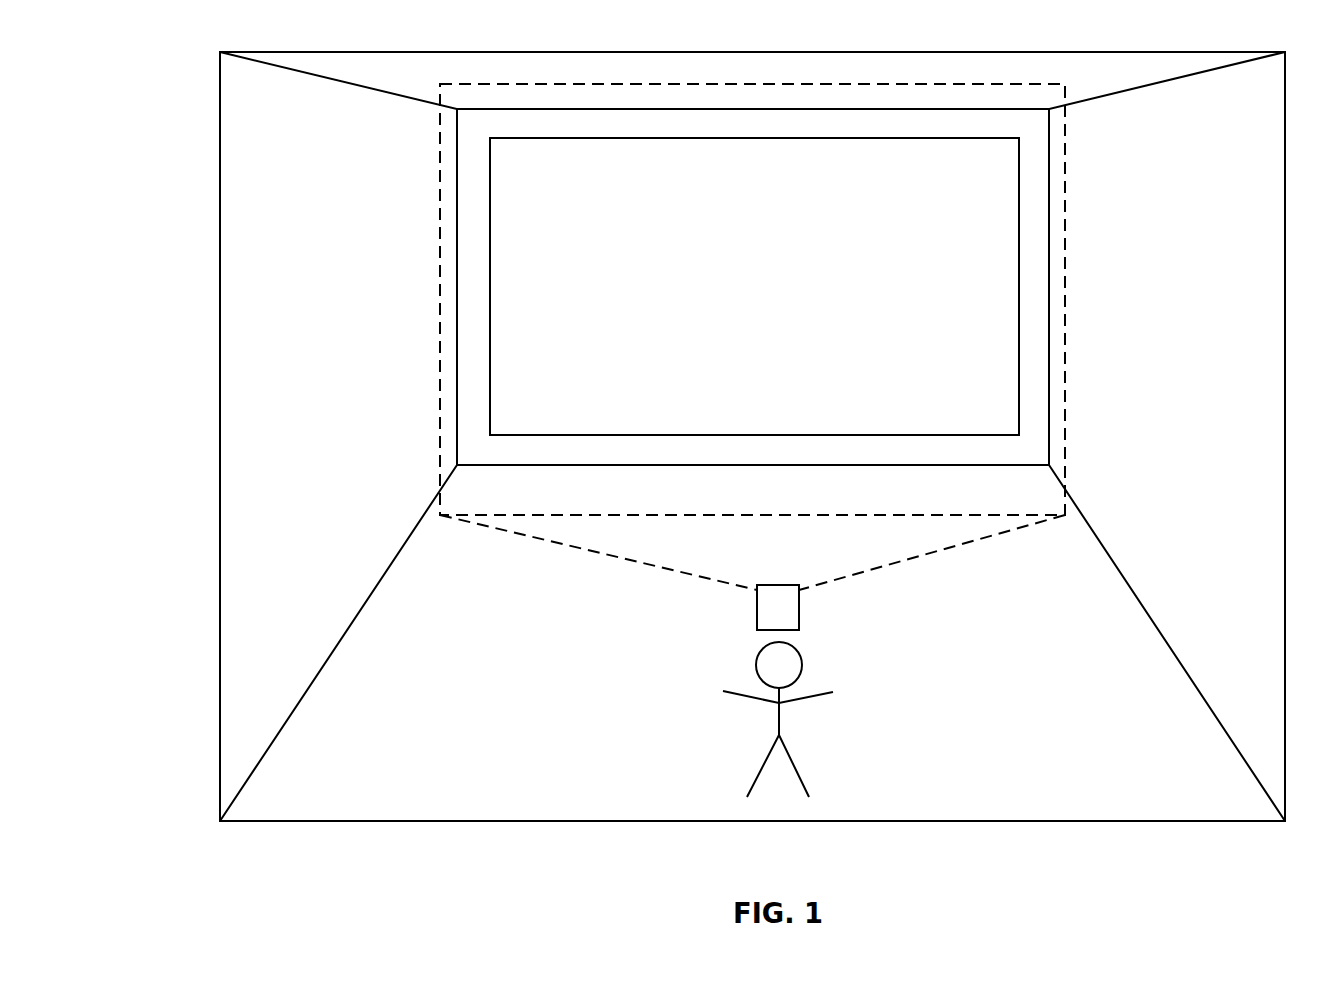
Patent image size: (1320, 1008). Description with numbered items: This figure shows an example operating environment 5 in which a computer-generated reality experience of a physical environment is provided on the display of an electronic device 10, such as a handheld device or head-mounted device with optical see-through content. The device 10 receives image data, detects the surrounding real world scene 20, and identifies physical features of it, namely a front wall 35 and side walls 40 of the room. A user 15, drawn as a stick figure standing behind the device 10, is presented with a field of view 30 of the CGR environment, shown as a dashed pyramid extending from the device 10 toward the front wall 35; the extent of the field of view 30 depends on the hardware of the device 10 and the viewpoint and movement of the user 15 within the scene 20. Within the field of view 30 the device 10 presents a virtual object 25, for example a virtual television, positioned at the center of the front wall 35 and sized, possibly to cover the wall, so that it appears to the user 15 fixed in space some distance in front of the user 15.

The operating environment 5 is at (170, 72).
The device 10 is at (799, 600).
The user 15 is at (795, 762).
The physical environment 20 is at (501, 743).
The virtual object 25 is at (772, 290).
The field of view 30 is at (440, 371).
The front wall 35 is at (489, 135).
The side walls 40 is at (346, 297).